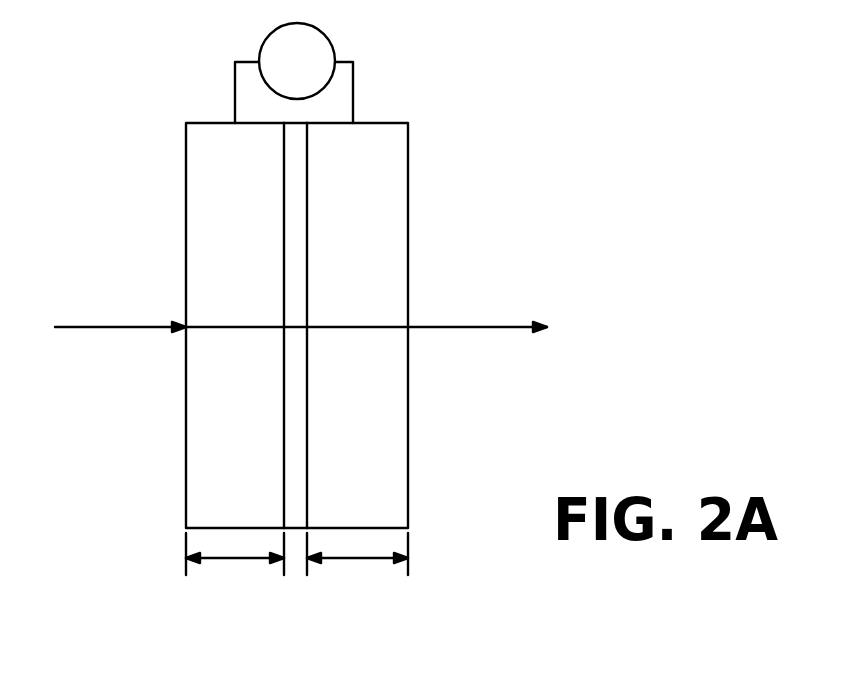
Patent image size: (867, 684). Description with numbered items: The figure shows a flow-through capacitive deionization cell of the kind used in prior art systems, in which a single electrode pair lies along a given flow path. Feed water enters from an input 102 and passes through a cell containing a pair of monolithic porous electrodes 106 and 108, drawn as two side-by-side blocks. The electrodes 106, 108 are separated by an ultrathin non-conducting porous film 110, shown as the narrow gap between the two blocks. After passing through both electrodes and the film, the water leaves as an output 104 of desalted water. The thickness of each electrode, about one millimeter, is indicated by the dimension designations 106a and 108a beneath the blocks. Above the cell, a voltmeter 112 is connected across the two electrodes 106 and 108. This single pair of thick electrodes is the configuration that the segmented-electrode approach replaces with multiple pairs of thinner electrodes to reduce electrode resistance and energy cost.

The input 102 is at (103, 325).
The output 104 is at (500, 322).
The monolithic porous electrode 106 is at (257, 482).
The monolithic porous electrode 108 is at (383, 482).
The ultrathin non-conducting porous film 110 is at (298, 188).
The voltmeter 112 is at (260, 42).
The dimension designation 106a is at (235, 562).
The dimension designation 108a is at (352, 562).